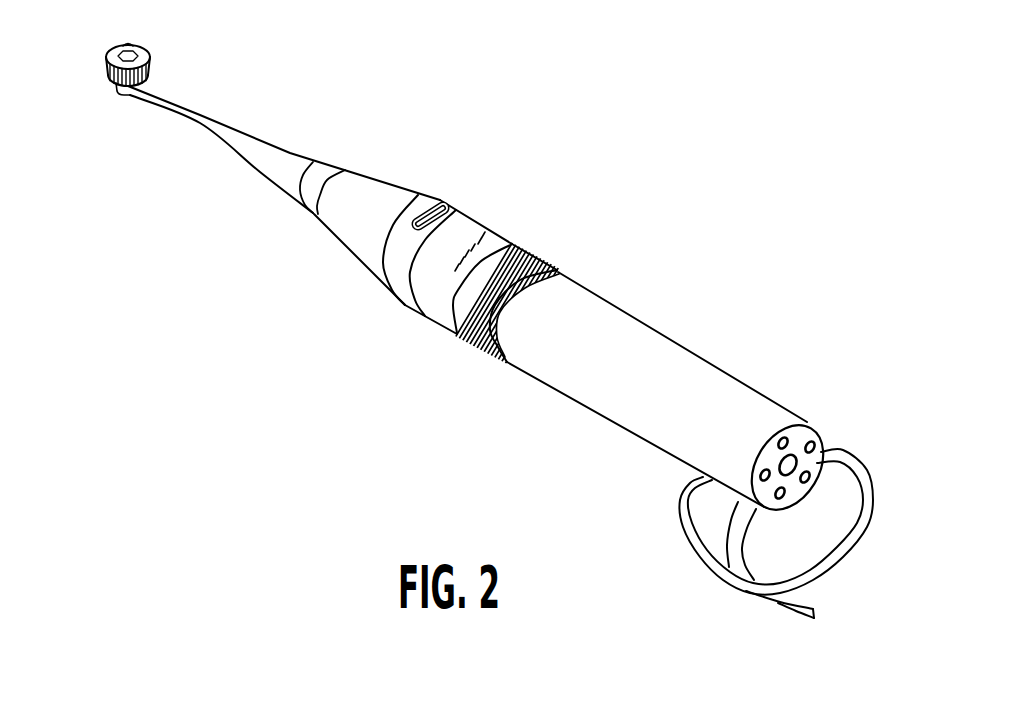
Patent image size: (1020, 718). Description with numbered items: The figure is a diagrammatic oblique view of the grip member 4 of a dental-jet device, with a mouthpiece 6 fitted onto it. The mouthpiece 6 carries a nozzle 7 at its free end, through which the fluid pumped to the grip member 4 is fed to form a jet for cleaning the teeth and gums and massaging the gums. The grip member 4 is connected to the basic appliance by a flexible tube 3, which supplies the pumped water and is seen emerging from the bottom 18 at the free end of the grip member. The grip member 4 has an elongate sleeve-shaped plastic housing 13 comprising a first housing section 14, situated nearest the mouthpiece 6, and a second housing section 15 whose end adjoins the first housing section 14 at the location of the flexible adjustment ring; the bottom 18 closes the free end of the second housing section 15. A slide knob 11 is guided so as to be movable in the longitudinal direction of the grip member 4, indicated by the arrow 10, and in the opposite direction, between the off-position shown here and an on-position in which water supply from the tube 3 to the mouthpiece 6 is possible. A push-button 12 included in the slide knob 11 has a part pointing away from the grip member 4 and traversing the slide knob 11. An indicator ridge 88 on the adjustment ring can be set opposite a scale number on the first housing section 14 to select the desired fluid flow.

The flexible tube 3 is at (686, 493).
The grip member 4 is at (597, 283).
The mouthpiece 6 is at (219, 145).
The nozzle 7 is at (154, 63).
The arrow 10 is at (332, 132).
The slide knob 11 is at (452, 214).
The push-button 12 is at (413, 204).
The plastic housing 13 is at (431, 316).
The first housing section 14 is at (355, 234).
The second housing section 15 is at (588, 382).
The bottom 18 is at (820, 437).
The indicator ridge 88 is at (483, 243).